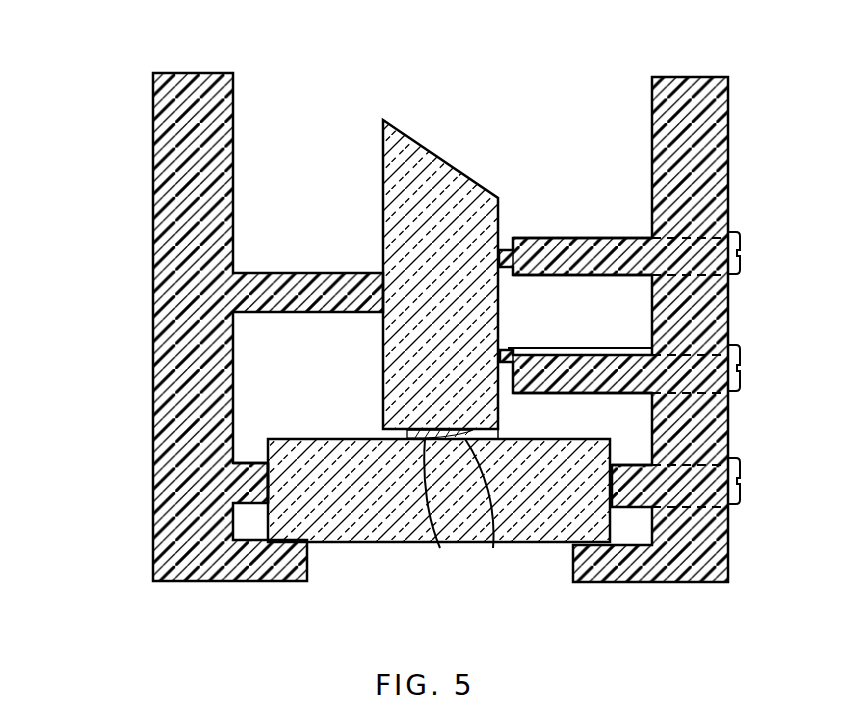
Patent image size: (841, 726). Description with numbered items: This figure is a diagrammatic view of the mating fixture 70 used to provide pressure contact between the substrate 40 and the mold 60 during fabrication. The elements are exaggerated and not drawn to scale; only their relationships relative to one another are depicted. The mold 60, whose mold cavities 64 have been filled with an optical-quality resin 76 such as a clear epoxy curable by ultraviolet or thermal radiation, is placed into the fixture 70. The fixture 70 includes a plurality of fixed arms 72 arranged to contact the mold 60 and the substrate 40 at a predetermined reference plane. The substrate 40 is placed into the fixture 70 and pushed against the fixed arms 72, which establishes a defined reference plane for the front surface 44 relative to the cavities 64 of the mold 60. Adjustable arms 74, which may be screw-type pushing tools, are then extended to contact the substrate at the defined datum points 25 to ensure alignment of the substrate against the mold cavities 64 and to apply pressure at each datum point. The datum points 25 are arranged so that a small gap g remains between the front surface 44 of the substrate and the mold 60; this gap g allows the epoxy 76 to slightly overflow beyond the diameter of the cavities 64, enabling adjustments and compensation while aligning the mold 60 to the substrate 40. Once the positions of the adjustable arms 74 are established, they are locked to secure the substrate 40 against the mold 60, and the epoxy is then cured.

The mating fixture 70 is at (104, 102).
The substrate 40 is at (437, 160).
The datum points 25 is at (502, 249).
The adjustable arms 74 is at (612, 279).
The front surface 44 is at (499, 438).
The gap g is at (390, 432).
The fixed arms 72 is at (318, 313).
The mold 60 is at (362, 543).
The optical-quality resin 76 is at (446, 511).
The mold cavities 64 is at (494, 511).